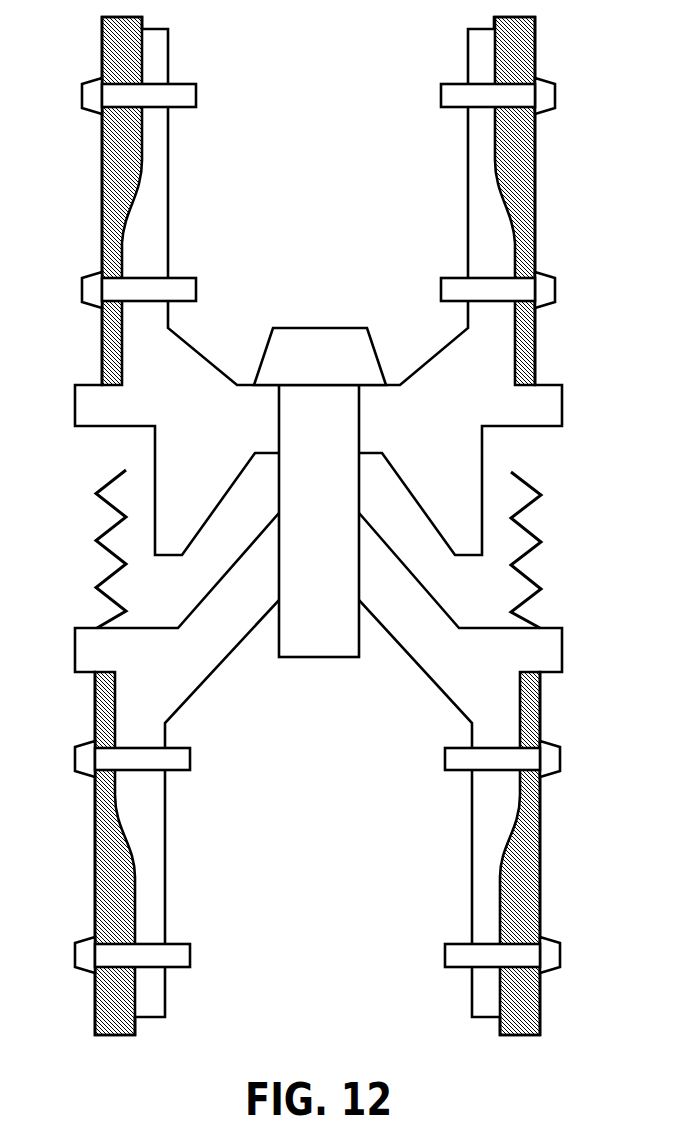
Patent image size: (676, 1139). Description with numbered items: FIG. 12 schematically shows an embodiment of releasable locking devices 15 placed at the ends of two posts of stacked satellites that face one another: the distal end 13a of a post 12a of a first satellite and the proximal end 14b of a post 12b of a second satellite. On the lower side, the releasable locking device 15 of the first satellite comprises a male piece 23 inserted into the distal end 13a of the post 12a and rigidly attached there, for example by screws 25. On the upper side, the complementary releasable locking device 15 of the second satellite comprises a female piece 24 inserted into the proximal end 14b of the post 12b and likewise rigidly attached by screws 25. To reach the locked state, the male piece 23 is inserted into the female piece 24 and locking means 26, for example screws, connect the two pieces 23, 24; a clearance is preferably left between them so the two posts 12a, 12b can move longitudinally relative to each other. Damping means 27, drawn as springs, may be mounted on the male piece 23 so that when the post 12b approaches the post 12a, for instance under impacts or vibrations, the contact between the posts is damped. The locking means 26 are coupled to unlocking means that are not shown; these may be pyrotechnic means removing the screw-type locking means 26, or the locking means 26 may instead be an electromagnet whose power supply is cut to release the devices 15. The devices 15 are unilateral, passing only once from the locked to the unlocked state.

The post of the first satellite 12a is at (166, 993).
The post of the second satellite 12b is at (170, 57).
The distal end 13a is at (472, 992).
The proximal end 14b is at (468, 62).
The releasable locking device 15 is at (566, 428).
The male piece 23 is at (562, 650).
The female piece 24 is at (562, 403).
The screws 25 is at (82, 92).
The locking means 26 is at (308, 328).
The damping means 27 is at (107, 483).